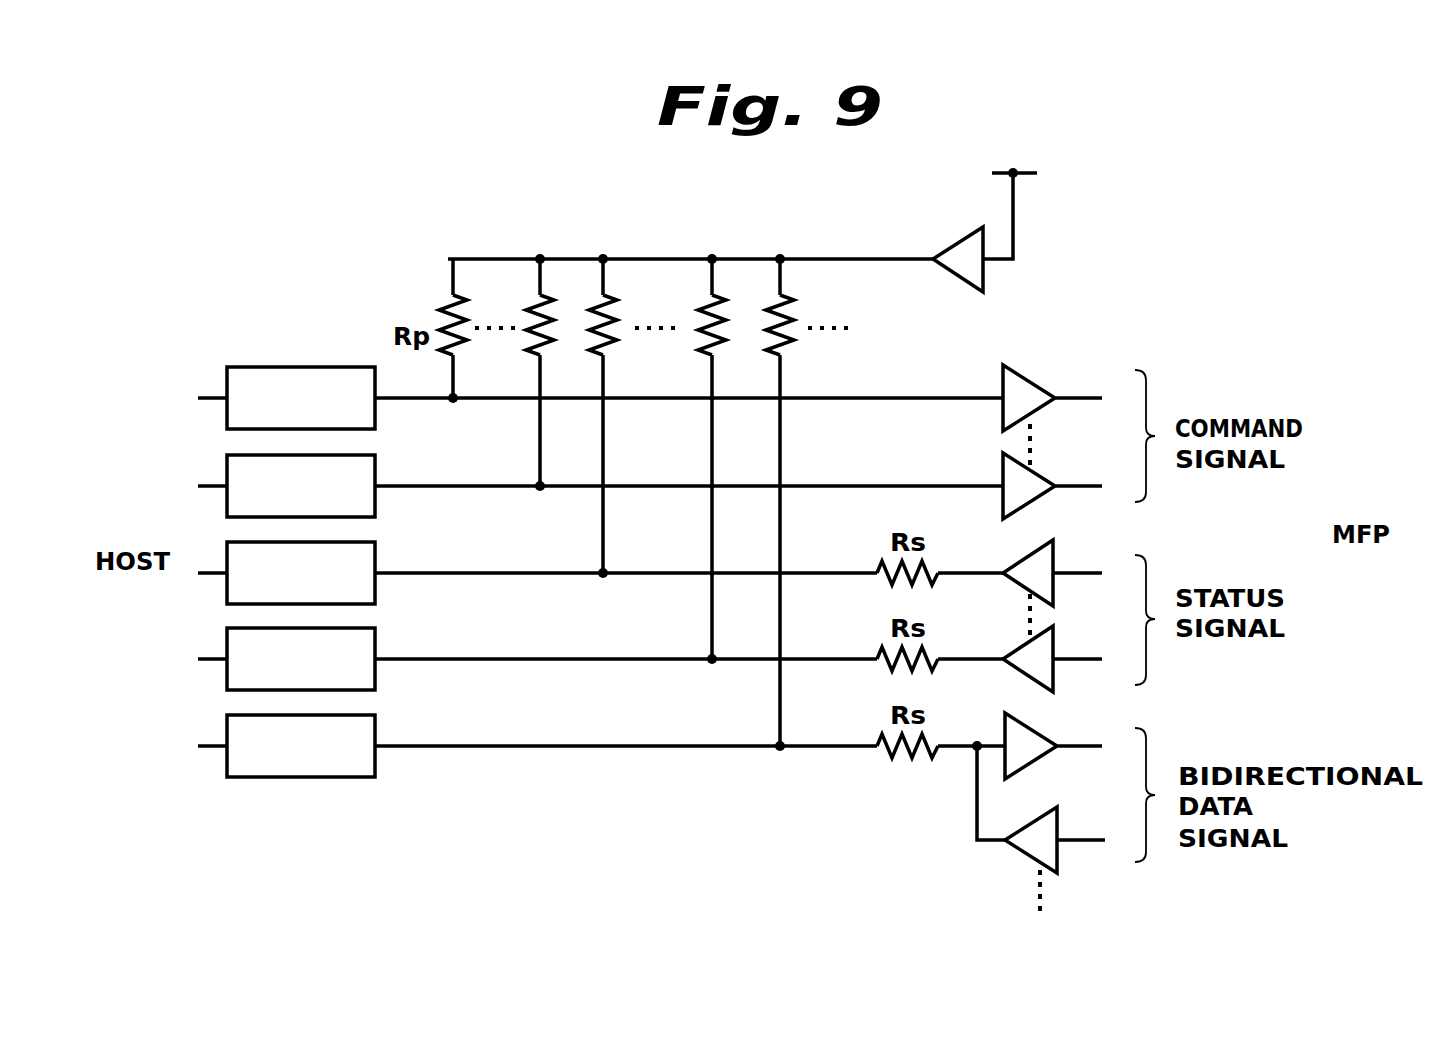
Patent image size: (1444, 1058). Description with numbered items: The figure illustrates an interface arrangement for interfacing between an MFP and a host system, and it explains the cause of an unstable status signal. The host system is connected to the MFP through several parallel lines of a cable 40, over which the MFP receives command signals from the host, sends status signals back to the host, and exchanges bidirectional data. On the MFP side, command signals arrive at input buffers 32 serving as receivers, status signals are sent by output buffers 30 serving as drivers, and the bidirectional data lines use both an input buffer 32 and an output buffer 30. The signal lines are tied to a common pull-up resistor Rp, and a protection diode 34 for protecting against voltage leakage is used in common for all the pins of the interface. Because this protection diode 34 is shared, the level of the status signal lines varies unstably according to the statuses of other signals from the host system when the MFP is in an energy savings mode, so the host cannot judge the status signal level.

The cable 40 is at (310, 362).
The protection diode 34 is at (953, 241).
The input buffer 32 is at (1020, 372).
The output buffer 30 is at (1054, 556).